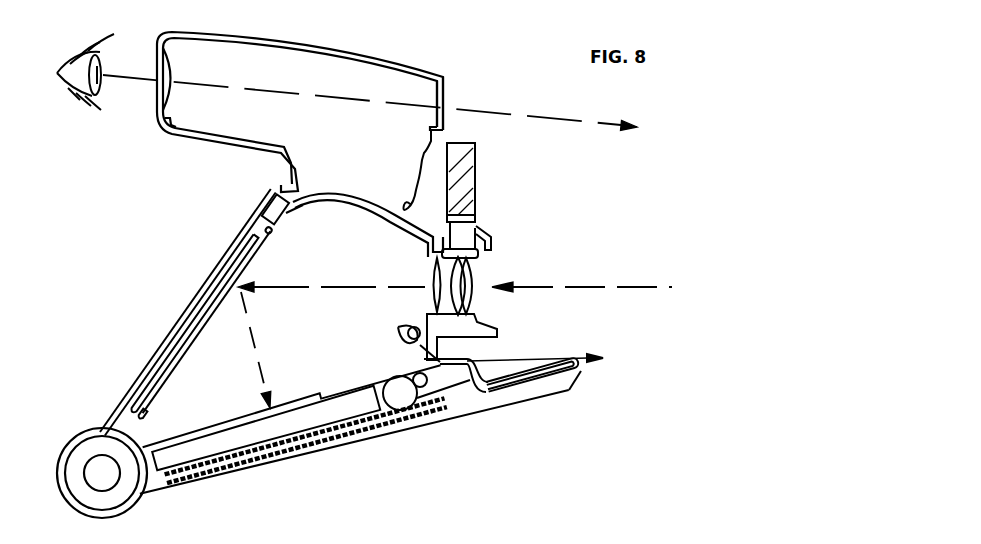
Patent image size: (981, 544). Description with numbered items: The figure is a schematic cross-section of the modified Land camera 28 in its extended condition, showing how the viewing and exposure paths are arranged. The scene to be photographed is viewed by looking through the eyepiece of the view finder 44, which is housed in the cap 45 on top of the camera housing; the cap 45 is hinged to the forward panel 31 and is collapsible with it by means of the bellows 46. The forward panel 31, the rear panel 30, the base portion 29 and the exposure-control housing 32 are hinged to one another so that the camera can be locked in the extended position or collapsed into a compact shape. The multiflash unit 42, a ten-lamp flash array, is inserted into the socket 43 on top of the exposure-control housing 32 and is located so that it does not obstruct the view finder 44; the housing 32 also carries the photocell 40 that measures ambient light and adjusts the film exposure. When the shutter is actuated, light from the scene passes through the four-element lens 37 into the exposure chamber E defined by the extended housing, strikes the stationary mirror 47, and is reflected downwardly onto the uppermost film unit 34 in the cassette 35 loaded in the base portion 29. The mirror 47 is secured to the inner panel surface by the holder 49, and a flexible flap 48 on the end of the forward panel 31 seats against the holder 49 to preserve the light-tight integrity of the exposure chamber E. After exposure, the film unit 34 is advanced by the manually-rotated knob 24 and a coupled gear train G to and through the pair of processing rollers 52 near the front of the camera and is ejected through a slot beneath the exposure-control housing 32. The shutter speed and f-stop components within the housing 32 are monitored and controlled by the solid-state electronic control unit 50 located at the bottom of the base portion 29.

The manually-rotated knob 24 is at (107, 503).
The camera 28 is at (66, 378).
The base portion 29 is at (550, 386).
The rear panel 30 is at (198, 287).
The forward panel 31 is at (330, 194).
The exposure-control housing 32 is at (497, 333).
The film unit 34 is at (560, 356).
The cassette 35 is at (240, 440).
The lens 37 is at (472, 274).
The photocell 40 is at (500, 543).
The multiflash unit 42 is at (477, 159).
The socket 43 is at (482, 224).
The view finder 44 is at (443, 92).
The cap 45 is at (351, 49).
The bellows 46 is at (423, 166).
The stationary mirror 47 is at (208, 322).
The flexible flap 48 is at (300, 212).
The holder 49 is at (135, 400).
The electronic control unit 50 is at (313, 437).
The processing rollers 52 is at (404, 349).
The exposure chamber E is at (340, 254).
The gear train G is at (400, 388).